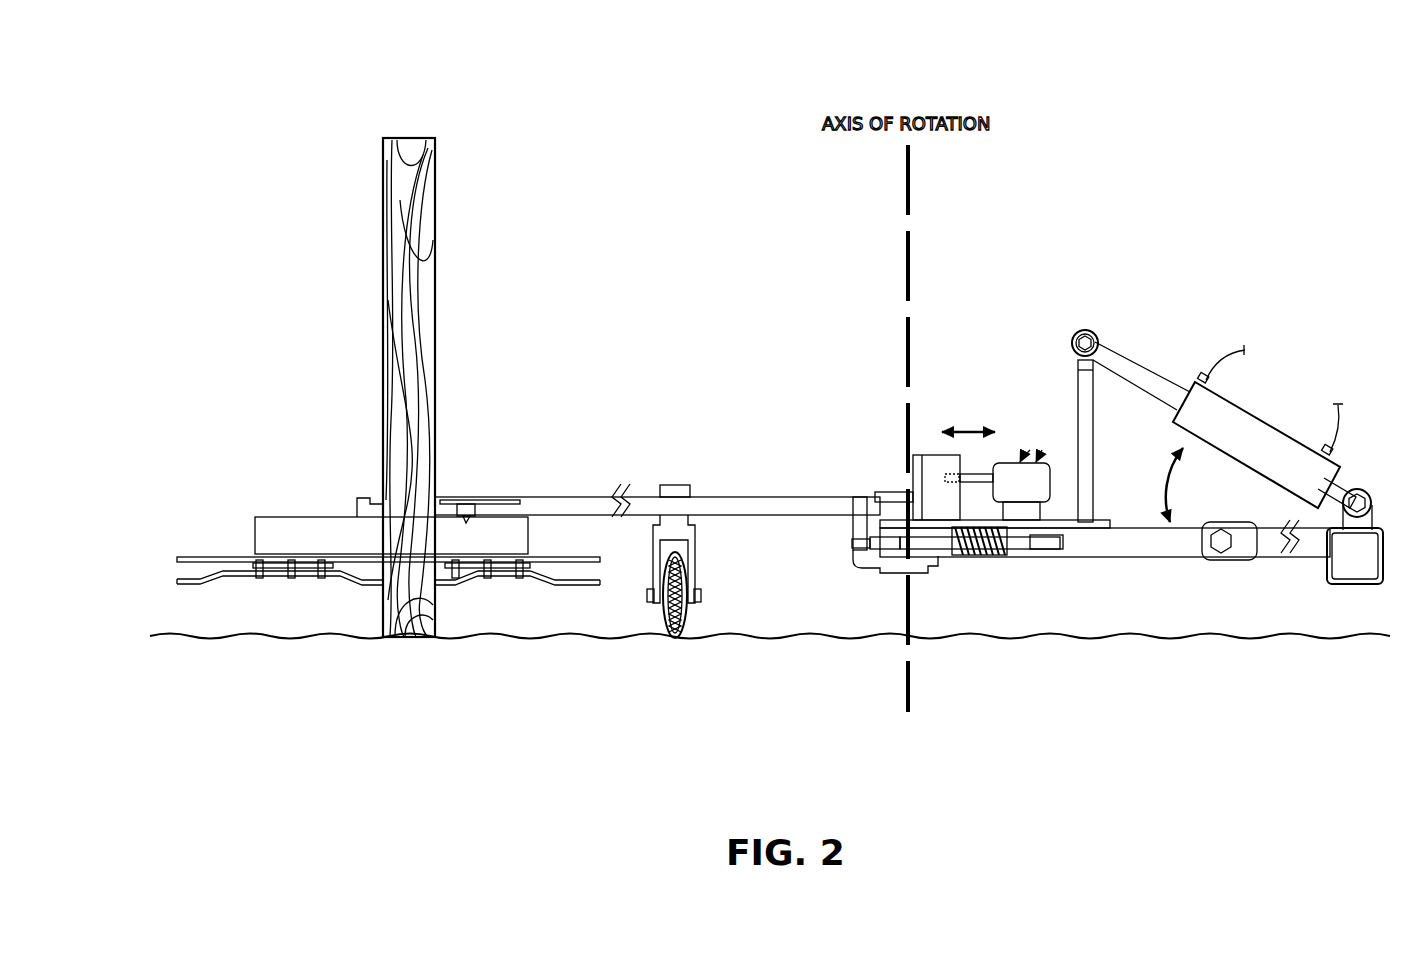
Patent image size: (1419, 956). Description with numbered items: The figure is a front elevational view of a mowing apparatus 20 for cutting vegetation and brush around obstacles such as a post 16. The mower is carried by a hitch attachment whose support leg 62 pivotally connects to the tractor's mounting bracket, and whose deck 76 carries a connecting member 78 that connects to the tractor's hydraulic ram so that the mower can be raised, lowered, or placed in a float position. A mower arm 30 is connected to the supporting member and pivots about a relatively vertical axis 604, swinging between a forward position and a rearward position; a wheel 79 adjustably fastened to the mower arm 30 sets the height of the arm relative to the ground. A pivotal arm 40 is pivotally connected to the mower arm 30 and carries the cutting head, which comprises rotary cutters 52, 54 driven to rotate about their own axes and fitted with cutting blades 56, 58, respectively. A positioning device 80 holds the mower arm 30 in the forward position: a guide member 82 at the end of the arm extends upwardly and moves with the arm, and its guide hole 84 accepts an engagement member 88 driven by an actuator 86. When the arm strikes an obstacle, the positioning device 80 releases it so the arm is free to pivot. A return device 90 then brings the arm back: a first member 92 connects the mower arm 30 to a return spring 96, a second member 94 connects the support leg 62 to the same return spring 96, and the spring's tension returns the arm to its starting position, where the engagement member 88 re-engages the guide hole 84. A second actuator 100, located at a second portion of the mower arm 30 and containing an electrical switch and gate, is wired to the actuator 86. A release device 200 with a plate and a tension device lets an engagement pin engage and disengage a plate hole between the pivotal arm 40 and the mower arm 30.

The post 16 is at (410, 138).
The mowing apparatus 20 is at (1164, 148).
The axis 604 is at (910, 222).
The mower arm 30 is at (775, 497).
The second actuator 100 is at (465, 490).
The release device 200 is at (462, 532).
The pivotal arm 40 is at (316, 517).
The rotary cutter 52 is at (210, 557).
The rotary cutter 54 is at (545, 559).
The cutting blade 56 is at (188, 585).
The cutting blade 58 is at (560, 586).
The wheel 79 is at (700, 565).
The positioning device 80 is at (988, 320).
The guide member 82 is at (910, 462).
The guide hole 84 is at (952, 470).
The engagement member 88 is at (978, 467).
The actuator 86 is at (1040, 456).
The deck 76 is at (1062, 520).
The connecting member 78 is at (1093, 447).
The return device 90 is at (1015, 565).
The return spring 96 is at (975, 556).
The second member 94 is at (1063, 541).
The first member 92 is at (852, 548).
The support leg 62 is at (1152, 560).